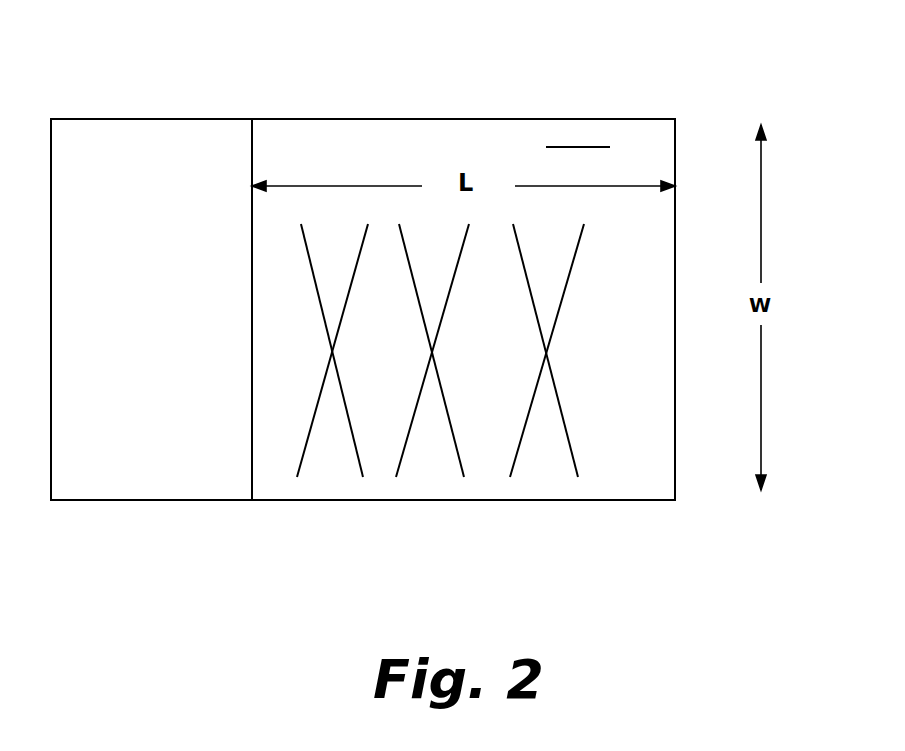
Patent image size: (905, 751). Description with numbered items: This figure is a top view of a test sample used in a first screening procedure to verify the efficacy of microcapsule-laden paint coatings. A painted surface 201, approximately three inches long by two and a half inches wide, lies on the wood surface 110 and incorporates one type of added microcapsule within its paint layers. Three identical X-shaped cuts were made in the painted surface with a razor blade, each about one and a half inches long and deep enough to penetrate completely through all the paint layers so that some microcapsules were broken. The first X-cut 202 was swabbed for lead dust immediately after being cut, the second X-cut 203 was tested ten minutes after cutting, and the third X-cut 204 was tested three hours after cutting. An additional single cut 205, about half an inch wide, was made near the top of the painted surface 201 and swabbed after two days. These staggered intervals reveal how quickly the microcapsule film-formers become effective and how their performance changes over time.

The wood surface 110 is at (802, 108).
The painted surface 201 is at (345, 132).
The first X-cut 202 is at (360, 450).
The second X-cut 203 is at (455, 450).
The third X-cut 204 is at (522, 453).
The single cut 205 is at (567, 137).